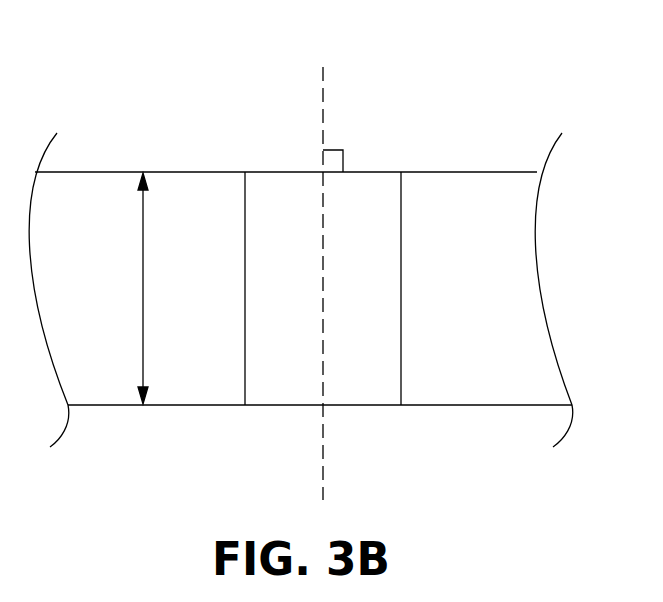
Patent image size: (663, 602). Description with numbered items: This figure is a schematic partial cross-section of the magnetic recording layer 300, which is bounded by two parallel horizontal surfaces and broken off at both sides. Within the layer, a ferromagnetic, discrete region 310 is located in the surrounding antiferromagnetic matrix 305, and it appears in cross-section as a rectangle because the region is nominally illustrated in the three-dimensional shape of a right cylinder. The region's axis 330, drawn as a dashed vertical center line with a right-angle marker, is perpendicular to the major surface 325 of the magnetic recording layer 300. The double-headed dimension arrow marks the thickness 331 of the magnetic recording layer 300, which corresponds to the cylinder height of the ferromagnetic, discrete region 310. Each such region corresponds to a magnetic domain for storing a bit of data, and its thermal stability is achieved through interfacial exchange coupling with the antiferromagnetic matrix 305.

The magnetic recording layer 300 is at (521, 90).
The antiferromagnetic matrix 305 is at (103, 192).
The ferromagnetic, discrete region 310 is at (369, 390).
The major surface 325 is at (472, 172).
The axis 330 is at (323, 88).
The thickness 331 is at (143, 287).